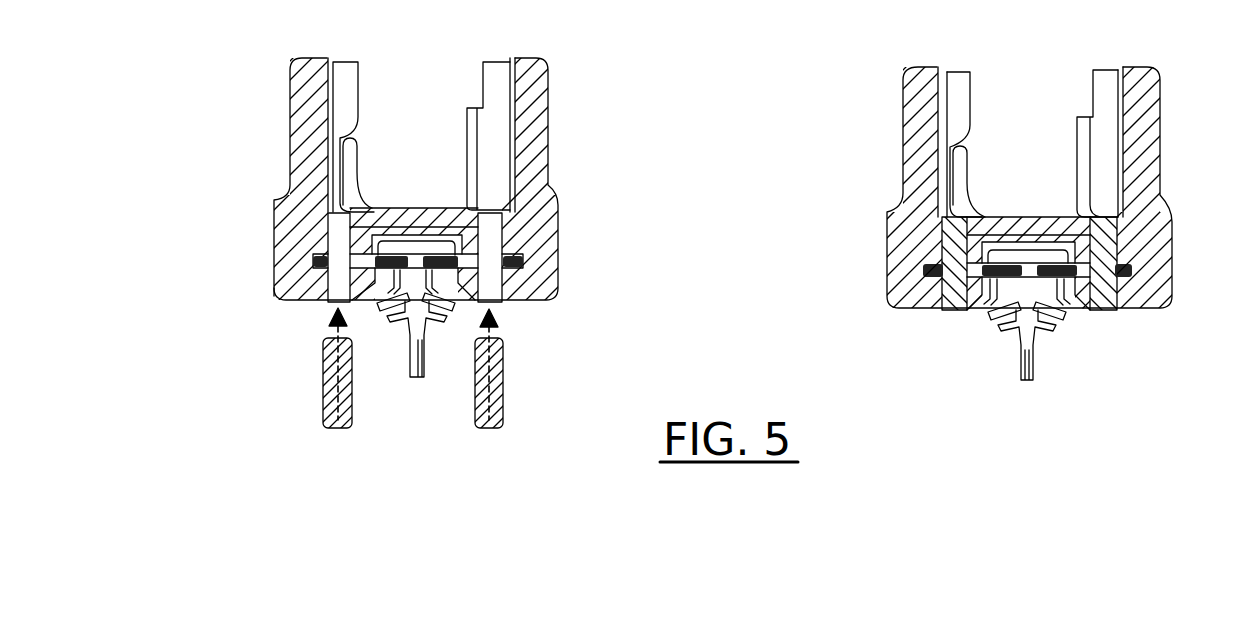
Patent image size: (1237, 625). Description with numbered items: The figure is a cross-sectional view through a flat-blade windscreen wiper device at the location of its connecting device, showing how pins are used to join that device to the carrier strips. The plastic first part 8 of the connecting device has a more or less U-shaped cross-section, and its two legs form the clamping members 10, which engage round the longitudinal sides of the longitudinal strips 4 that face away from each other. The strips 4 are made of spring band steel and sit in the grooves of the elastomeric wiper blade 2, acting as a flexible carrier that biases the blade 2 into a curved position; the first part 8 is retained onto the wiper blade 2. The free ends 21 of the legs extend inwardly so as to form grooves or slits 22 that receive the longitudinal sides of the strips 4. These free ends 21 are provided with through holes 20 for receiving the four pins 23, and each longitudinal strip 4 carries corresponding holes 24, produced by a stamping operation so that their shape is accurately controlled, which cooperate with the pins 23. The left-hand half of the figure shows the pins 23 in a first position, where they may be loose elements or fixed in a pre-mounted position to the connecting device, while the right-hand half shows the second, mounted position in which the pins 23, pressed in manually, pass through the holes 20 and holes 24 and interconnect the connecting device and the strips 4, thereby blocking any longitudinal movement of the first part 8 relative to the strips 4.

The wiper blade 2 is at (1083, 372).
The longitudinal strips 4 is at (515, 263).
The first part 8 is at (540, 153).
The clamping members 10 is at (286, 229).
The through holes 20 is at (337, 288).
The free ends 21 is at (392, 293).
The grooves or slits 22 is at (295, 290).
The pins 23 is at (472, 434).
The holes 24 is at (313, 258).